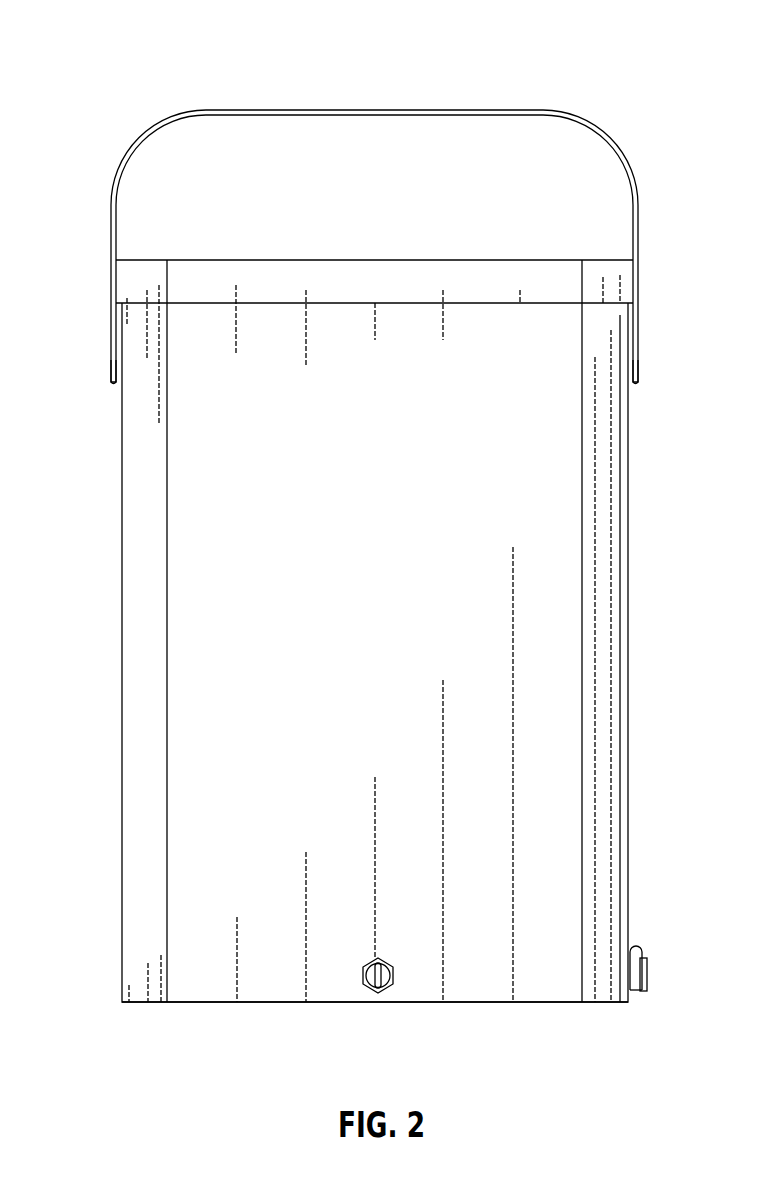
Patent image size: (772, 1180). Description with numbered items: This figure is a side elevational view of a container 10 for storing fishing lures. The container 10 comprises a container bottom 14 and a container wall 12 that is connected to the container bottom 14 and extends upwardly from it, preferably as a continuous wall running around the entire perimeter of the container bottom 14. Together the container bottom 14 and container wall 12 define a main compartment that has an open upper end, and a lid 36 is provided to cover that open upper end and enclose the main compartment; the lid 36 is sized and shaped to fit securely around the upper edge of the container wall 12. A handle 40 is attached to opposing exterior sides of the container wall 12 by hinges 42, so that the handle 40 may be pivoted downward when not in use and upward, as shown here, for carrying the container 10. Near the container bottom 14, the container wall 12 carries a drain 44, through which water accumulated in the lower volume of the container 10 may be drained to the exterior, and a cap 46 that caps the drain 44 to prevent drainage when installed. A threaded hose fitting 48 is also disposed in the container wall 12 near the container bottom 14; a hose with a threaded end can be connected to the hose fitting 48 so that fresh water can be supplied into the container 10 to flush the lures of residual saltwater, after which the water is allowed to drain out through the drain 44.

The container 10 is at (132, 54).
The container wall 12 is at (201, 676).
The container bottom 14 is at (215, 1002).
The lid 36 is at (225, 258).
The handle 40 is at (585, 122).
The hinges 42 is at (116, 377).
The drain 44 is at (635, 985).
The cap 46 is at (647, 975).
The threaded hose fitting 48 is at (368, 992).